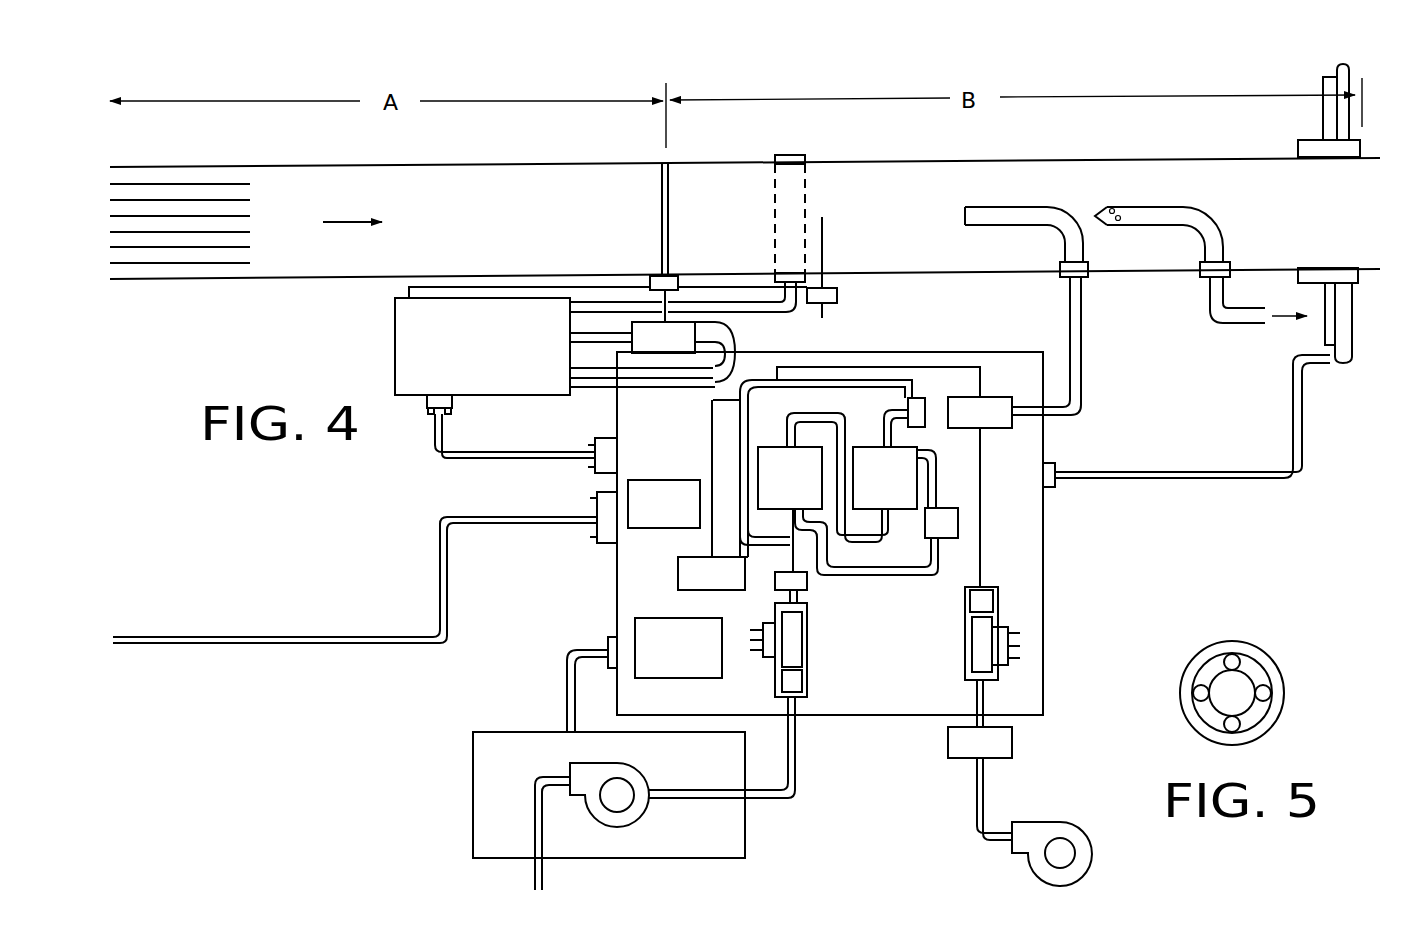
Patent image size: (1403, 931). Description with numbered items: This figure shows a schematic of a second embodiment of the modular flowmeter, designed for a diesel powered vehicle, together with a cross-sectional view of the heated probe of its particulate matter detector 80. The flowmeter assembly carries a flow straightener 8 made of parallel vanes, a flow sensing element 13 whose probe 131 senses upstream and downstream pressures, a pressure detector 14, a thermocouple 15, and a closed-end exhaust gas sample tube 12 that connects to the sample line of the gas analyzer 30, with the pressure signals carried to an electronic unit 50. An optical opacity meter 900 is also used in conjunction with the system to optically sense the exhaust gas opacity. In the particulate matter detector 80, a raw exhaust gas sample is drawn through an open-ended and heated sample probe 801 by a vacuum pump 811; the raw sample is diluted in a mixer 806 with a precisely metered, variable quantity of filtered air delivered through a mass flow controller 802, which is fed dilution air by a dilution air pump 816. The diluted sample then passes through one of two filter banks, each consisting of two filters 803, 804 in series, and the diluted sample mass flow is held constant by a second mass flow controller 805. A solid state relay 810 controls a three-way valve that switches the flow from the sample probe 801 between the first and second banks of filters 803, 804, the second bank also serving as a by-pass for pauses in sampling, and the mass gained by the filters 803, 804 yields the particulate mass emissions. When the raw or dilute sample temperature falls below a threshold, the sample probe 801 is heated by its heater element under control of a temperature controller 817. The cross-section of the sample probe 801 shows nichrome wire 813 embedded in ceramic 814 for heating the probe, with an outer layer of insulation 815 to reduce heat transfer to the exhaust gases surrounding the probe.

In FIG. 4, the flow straightener 8 is at (182, 185).
In FIG. 4, the probe 131 is at (662, 207).
In FIG. 4, the flow sensing element 13 is at (684, 294).
In FIG. 4, the pressure detector 14 is at (790, 155).
In FIG. 4, the thermocouple 15 is at (845, 298).
In FIG. 4, the electronic unit 50 is at (497, 358).
In FIG. 4, the particulate matter detector 80 is at (1046, 527).
In FIG. 4, the sample probe 801 is at (987, 207).
In FIG. 5, the sample probe 801 is at (1290, 672).
In FIG. 4, the exhaust gas sample tube 12 is at (1137, 203).
In FIG. 4, the optical opacity meter 900 is at (1296, 143).
In FIG. 4, the gas analyzer 30 is at (1206, 373).
In FIG. 4, the mixer 806 is at (963, 397).
In FIG. 4, the temperature controller 817 is at (683, 513).
In FIG. 4, the filter 804 is at (807, 490).
In FIG. 4, the filter 803 is at (902, 490).
In FIG. 4, the solid state relay 810 is at (696, 663).
In FIG. 4, the second mass flow controller 805 is at (810, 640).
In FIG. 4, the mass flow controller 802 is at (997, 612).
In FIG. 4, the vacuum pump 811 is at (600, 763).
In FIG. 4, the dilution air pump 816 is at (1093, 838).
In FIG. 5, the nichrome wire 813 is at (1200, 693).
In FIG. 5, the ceramic 814 is at (1250, 670).
In FIG. 5, the layer of insulation 815 is at (1255, 735).